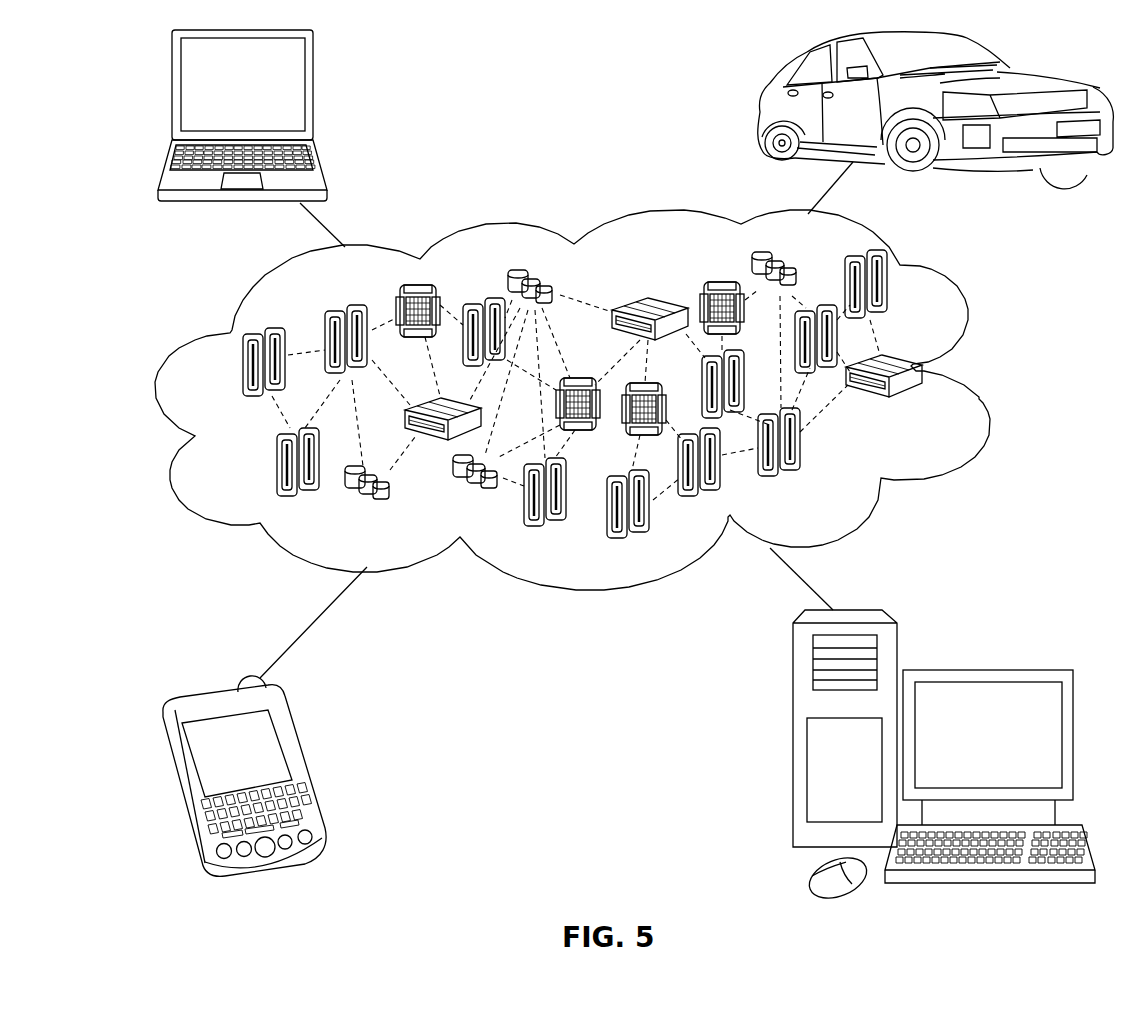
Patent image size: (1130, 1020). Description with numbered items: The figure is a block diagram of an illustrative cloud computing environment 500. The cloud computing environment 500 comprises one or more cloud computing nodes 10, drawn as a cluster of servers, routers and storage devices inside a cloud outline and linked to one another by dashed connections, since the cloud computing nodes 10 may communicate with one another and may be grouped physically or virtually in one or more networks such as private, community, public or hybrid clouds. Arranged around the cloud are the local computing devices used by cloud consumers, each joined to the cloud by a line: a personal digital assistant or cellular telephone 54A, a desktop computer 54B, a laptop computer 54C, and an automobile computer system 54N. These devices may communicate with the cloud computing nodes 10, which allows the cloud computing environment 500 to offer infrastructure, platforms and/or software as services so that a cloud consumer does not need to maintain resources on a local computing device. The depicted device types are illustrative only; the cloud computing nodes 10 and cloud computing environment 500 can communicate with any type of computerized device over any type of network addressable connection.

The cloud computing environment 500 is at (988, 383).
The cloud computing nodes 10 is at (940, 405).
The personal digital assistant (PDA) or cellular telephone 54A is at (305, 765).
The desktop computer 54B is at (985, 668).
The laptop computer 54C is at (315, 92).
The automobile computer system 54N is at (758, 108).